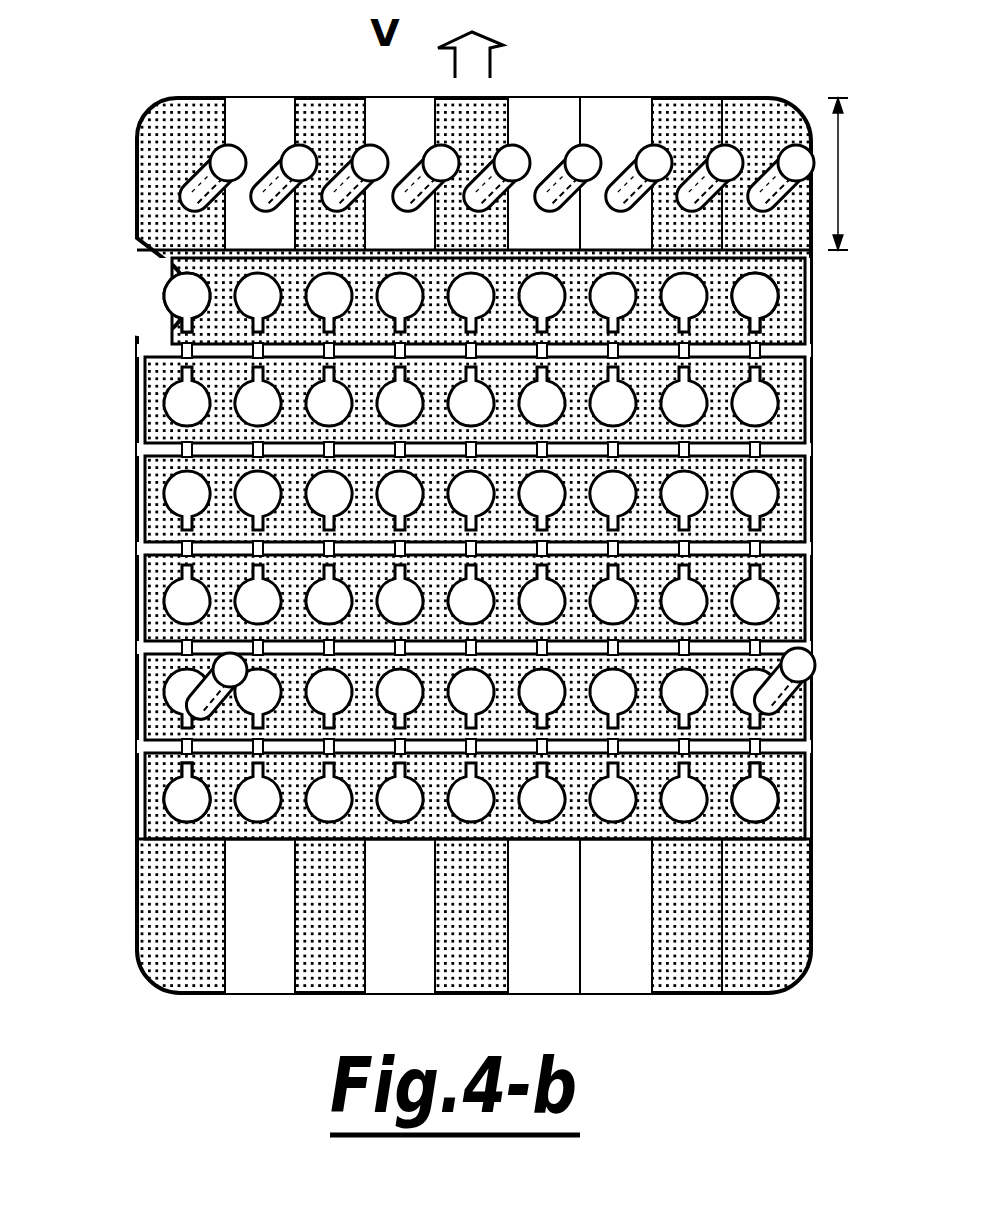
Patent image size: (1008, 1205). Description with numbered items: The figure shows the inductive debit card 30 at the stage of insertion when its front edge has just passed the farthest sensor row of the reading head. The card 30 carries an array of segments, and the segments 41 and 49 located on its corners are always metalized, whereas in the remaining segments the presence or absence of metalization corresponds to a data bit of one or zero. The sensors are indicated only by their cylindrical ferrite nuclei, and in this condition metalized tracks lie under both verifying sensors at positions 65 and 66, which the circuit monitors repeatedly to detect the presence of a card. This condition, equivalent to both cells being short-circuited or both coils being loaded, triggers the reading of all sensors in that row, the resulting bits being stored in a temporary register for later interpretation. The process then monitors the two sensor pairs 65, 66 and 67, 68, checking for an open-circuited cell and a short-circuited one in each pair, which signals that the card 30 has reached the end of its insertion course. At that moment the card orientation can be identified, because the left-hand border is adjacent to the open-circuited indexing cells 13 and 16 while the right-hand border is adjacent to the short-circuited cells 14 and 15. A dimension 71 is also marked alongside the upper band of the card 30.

The card 30 is at (48, 917).
The corner segment 41 is at (162, 143).
The corner segment 49 is at (742, 117).
The verifying sensor 65 is at (188, 207).
The verifying sensor 66 is at (790, 160).
The rail height 71 is at (842, 197).
The indexing cell 13 is at (190, 297).
The indexing cell 14 is at (763, 293).
The sensor 68 is at (173, 700).
The sensor 67 is at (800, 665).
The indexing cell 16 is at (188, 798).
The indexing cell 15 is at (767, 798).